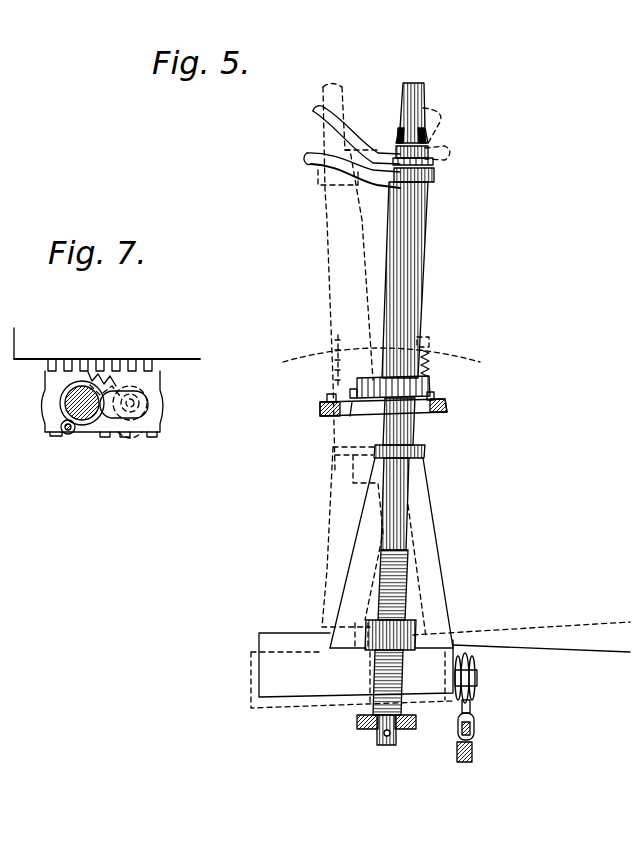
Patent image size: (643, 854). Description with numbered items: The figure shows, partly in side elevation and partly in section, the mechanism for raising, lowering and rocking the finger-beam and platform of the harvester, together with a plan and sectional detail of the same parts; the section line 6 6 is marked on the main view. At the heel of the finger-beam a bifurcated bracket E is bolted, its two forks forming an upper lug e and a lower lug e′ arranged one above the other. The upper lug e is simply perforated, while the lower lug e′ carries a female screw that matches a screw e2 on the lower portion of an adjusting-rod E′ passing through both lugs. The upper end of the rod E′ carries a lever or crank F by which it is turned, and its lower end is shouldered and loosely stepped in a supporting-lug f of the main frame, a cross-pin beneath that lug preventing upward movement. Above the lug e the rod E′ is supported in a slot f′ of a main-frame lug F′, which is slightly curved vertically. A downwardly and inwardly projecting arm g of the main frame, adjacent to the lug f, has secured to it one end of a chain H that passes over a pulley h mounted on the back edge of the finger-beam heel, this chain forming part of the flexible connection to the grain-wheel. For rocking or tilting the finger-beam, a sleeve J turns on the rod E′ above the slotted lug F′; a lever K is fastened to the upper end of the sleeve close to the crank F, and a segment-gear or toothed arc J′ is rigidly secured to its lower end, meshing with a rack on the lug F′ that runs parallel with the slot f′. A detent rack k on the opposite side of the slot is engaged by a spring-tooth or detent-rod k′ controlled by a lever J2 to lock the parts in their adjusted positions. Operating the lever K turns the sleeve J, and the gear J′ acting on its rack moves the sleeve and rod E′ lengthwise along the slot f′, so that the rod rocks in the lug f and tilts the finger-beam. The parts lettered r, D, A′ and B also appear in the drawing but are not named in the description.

In FIG. 5, the section line 6 6 is at (414, 83).
In FIG. 5, the lever or crank F is at (423, 113).
In FIG. 5, the lever J2 is at (330, 120).
In FIG. 5, the lever K is at (322, 162).
In FIG. 7, the lever K is at (110, 362).
In FIG. 5, the sleeve J is at (407, 280).
In FIG. 7, the sleeve J is at (105, 386).
In FIG. 5, the arc of movement r is at (380, 360).
In FIG. 5, the spring-tooth or detent-rod k' is at (432, 351).
In FIG. 7, the spring-tooth or detent-rod k' is at (73, 441).
In FIG. 5, the segment-gear or toothed arc J' is at (400, 383).
In FIG. 7, the segment-gear or toothed arc J' is at (73, 382).
In FIG. 5, the main-frame lug F' is at (394, 407).
In FIG. 7, the main-frame lug F' is at (62, 403).
In FIG. 5, the detent rack or row of teeth k is at (317, 405).
In FIG. 7, the detent rack or row of teeth k is at (130, 422).
In FIG. 5, the slot f' is at (334, 420).
In FIG. 7, the slot f' is at (48, 424).
In FIG. 5, the adjusting-rod E' is at (420, 421).
In FIG. 7, the adjusting-rod E' is at (106, 422).
In FIG. 5, the upper lug e is at (410, 450).
In FIG. 5, the bifurcated bracket E is at (387, 547).
In FIG. 5, the screw e2 is at (382, 594).
In FIG. 5, the lower lug e' is at (390, 635).
In FIG. 5, the beam D is at (352, 670).
In FIG. 5, the rail A' is at (521, 647).
In FIG. 5, the pulley h is at (478, 678).
In FIG. 5, the chain H is at (473, 720).
In FIG. 5, the arm of the main frame g is at (473, 758).
In FIG. 5, the supporting-lug f is at (377, 729).
In FIG. 7, the rack bar B is at (107, 343).